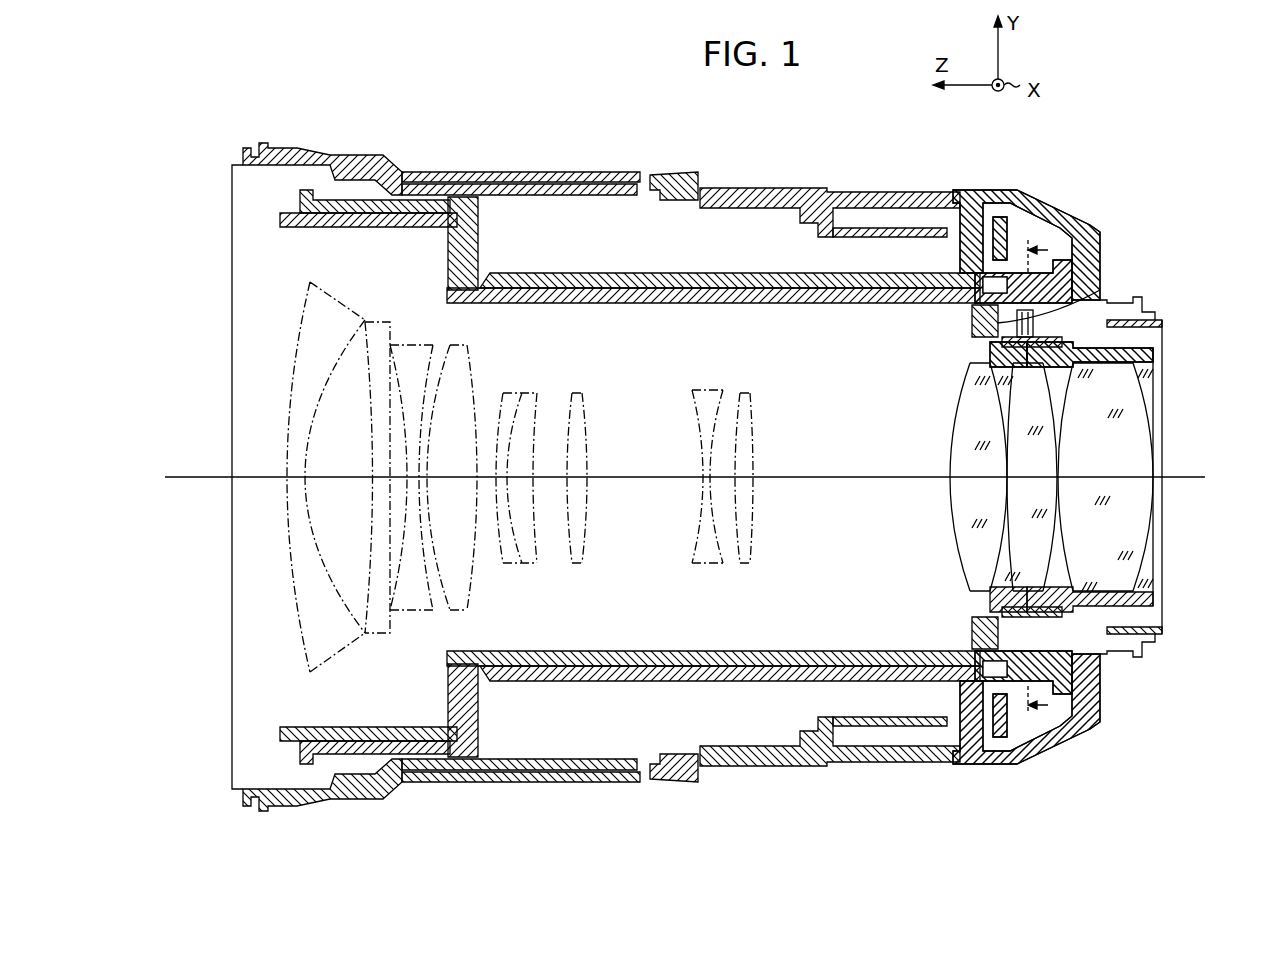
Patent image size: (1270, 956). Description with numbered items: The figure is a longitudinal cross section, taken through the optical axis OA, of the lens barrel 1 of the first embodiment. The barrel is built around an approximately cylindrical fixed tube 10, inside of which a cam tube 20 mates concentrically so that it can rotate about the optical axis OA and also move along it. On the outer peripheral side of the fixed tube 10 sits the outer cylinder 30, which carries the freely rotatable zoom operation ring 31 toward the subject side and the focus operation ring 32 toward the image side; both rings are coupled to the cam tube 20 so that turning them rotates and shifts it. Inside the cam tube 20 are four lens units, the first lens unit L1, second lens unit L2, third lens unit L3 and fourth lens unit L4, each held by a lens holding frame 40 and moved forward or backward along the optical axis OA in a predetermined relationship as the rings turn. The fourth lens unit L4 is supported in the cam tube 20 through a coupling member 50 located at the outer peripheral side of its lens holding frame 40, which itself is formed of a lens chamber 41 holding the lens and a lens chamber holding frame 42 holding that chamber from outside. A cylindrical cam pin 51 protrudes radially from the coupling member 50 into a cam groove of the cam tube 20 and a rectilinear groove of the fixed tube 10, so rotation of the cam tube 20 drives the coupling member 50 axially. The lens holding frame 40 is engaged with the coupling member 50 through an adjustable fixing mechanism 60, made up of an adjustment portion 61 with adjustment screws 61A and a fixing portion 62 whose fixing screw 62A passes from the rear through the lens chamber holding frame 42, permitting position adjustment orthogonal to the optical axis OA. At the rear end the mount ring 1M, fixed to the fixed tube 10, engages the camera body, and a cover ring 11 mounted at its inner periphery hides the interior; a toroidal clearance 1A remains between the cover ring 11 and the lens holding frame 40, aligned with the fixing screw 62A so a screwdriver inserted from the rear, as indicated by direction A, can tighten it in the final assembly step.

The lens barrel 1 is at (1093, 119).
The clearance 1A is at (1120, 335).
The mount ring 1M is at (1125, 300).
The fixed tube 10 is at (754, 273).
The cover ring 11 is at (1160, 318).
The cam tube 20 is at (782, 304).
The outer cylinder 30 is at (762, 188).
The zoom operation ring 31 is at (522, 170).
The focus operation ring 32 is at (890, 192).
The lens holding frame 40 is at (886, 368).
The lens chamber 41 is at (1005, 365).
The lens chamber holding frame 42 is at (990, 357).
The coupling member 50 is at (1002, 342).
The cam pin 51 is at (958, 322).
The adjustable fixing mechanism 60 is at (1026, 477).
The adjustment portion 61 is at (1048, 632).
The adjustment screw 61A is at (972, 634).
The fixing portion 62 is at (1064, 290).
The fixing screw 62A is at (1120, 303).
The first lens unit L1 is at (468, 345).
The second lens unit L2 is at (588, 384).
The third lens unit L3 is at (760, 384).
The fourth lens unit L4 is at (946, 440).
The optical axis OA is at (204, 465).
The viewing direction A is at (1038, 478).